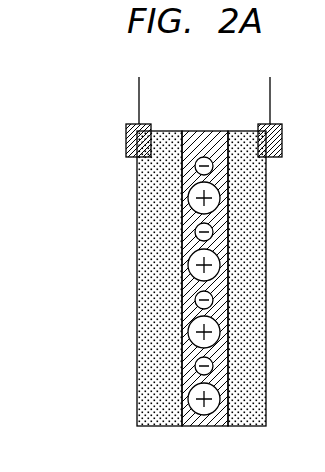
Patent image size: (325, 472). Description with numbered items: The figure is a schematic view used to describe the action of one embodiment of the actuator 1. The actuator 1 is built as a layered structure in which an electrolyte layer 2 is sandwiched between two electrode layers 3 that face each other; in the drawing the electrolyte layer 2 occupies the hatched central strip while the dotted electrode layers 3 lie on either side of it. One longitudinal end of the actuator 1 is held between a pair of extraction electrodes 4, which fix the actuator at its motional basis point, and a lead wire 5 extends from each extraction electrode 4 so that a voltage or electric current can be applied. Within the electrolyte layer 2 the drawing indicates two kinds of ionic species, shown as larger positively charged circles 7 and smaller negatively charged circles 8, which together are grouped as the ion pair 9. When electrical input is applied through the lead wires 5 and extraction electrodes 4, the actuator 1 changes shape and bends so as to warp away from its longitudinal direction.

The actuator 1 is at (78, 159).
The electrolyte layer 2 is at (182, 281).
The electrode layer 3 is at (138, 217).
The extraction electrode 4 is at (127, 128).
The lead wire 5 is at (139, 93).
The cation 7 is at (189, 328).
The anion 8 is at (195, 366).
The ionic liquid 9 is at (93, 320).